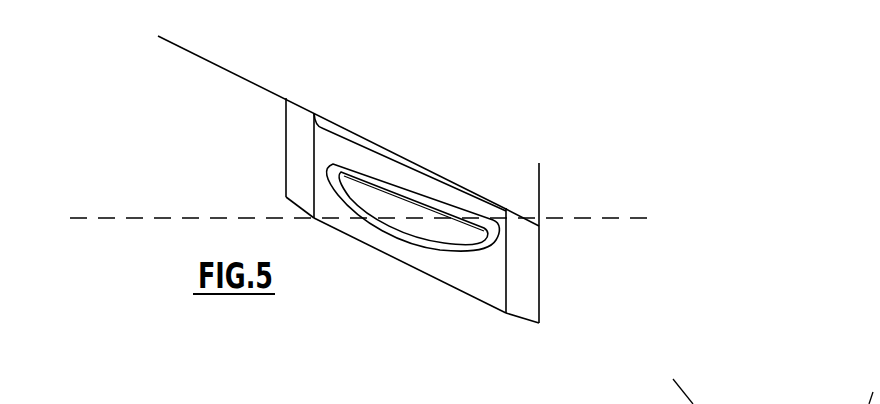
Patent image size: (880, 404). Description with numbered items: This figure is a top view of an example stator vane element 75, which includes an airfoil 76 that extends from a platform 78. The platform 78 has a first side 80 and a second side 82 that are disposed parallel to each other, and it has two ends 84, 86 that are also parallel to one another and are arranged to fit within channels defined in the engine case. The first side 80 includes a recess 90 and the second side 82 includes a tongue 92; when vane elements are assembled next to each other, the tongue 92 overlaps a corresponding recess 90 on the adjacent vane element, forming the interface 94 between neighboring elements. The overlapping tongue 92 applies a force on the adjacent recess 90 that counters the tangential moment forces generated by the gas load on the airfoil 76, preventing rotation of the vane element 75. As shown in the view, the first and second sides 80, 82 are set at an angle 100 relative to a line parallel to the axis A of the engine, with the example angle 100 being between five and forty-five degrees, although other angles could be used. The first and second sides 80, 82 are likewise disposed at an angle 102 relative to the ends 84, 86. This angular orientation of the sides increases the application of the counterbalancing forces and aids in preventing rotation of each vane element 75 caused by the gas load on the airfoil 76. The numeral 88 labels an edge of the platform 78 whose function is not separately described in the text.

The stator vane element 75 is at (376, 122).
The airfoil 76 is at (407, 181).
The platform 78 is at (448, 205).
The first side 80 is at (393, 136).
The second side 82 is at (401, 276).
The end 84 is at (548, 271).
The end 86 is at (275, 152).
The flange edge 88 is at (300, 185).
The recess 90 is at (443, 180).
The tongue 92 is at (372, 243).
The angle 100 is at (158, 208).
The angle 102 is at (512, 199).
The axis A is at (86, 217).
The interface 94 is at (788, 403).